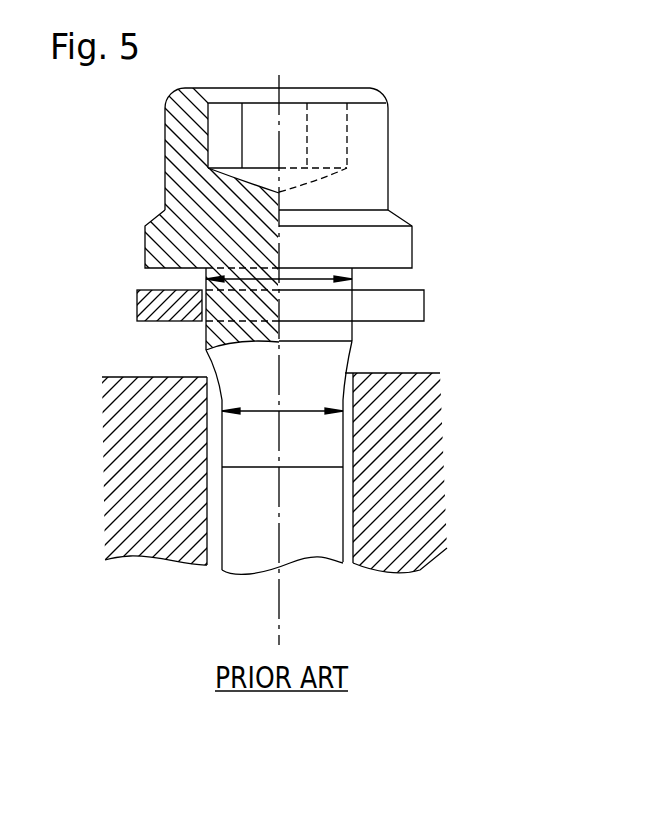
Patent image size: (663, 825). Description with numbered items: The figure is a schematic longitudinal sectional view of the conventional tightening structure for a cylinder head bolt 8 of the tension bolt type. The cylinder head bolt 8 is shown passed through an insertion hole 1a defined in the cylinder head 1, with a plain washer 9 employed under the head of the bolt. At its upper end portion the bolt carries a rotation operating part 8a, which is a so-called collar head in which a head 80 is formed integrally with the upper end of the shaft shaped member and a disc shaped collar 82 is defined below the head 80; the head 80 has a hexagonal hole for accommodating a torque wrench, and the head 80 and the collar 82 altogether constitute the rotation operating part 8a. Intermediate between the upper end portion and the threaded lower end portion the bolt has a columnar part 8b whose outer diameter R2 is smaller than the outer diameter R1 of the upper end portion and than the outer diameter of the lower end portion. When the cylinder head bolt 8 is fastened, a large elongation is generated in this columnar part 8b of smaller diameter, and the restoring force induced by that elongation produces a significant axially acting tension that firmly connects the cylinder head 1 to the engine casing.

The rotation operating part 8a is at (277, 220).
The head 80 is at (388, 148).
The disc shaped collar 82 is at (320, 233).
The plain washer 9 is at (424, 303).
The cylinder head bolt 8 is at (343, 490).
The columnar part 8b is at (312, 535).
The cylinder head 1 is at (413, 373).
The insertion hole 1a is at (358, 444).
The outer diameter of the upper end portion R1 is at (310, 267).
The outer diameter of the columnar part R2 is at (302, 411).